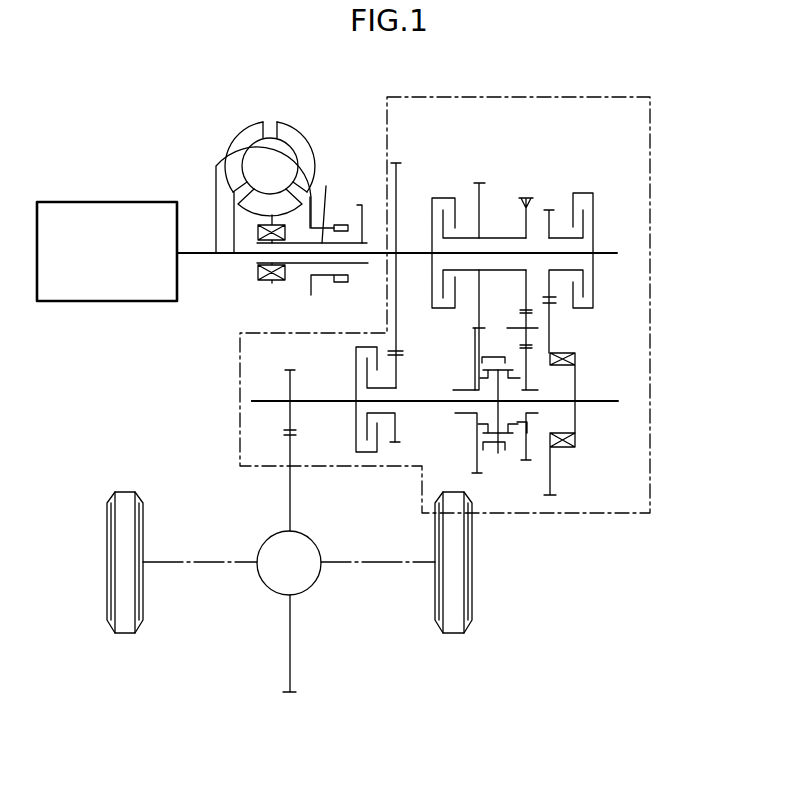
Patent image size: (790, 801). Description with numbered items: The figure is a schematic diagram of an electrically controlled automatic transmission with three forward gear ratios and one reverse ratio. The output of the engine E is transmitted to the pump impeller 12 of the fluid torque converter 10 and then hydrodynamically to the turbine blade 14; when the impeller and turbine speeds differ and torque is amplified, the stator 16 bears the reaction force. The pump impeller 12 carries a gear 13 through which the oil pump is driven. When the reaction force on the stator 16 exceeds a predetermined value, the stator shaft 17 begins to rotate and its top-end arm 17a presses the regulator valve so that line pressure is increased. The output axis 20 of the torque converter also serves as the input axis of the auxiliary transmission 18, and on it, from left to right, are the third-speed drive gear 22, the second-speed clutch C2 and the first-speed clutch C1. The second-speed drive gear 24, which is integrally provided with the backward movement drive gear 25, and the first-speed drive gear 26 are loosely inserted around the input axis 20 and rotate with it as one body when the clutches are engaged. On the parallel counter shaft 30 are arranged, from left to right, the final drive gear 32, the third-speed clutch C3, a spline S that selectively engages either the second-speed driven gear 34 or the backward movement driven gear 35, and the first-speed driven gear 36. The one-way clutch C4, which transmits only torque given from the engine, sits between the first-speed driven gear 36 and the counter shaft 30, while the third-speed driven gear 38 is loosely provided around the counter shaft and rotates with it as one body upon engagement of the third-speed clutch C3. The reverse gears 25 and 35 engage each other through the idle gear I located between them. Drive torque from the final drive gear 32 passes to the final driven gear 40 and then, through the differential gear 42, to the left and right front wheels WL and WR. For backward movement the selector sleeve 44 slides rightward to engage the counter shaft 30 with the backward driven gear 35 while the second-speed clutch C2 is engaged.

The engine E is at (112, 263).
The fluid torque converter 10 is at (296, 112).
The pump impeller 12 is at (300, 126).
The gear 13 is at (340, 225).
The turbine blade 14 is at (240, 132).
The stator 16 is at (250, 214).
The stator shaft 17 is at (329, 204).
The top-end arm 17a is at (361, 211).
The auxiliary transmission 18 is at (614, 84).
The output axis 20 is at (297, 255).
The third-speed drive gear 22 is at (397, 165).
The second-speed drive gear 24 is at (481, 197).
The backward movement drive gear 25 is at (527, 209).
The first-speed drive gear 26 is at (550, 219).
The counter shaft 30 is at (263, 401).
The final drive gear 32 is at (292, 391).
The second-speed driven gear 34 is at (475, 352).
The backward movement driven gear 35 is at (528, 440).
The first-speed driven gear 36 is at (552, 334).
The gear 38 is at (396, 442).
The final driven gear 40 is at (290, 485).
The differential gear 42 is at (300, 585).
The selector sleeve 44 is at (482, 450).
The first-speed clutch C1 is at (594, 208).
The second-speed clutch C2 is at (442, 199).
The third-speed clutch C3 is at (356, 419).
The one-way clutch C4 is at (555, 449).
The sun gear S is at (497, 405).
The idle gear I is at (522, 322).
The left front wheel WL is at (125, 634).
The right front wheel WR is at (458, 634).